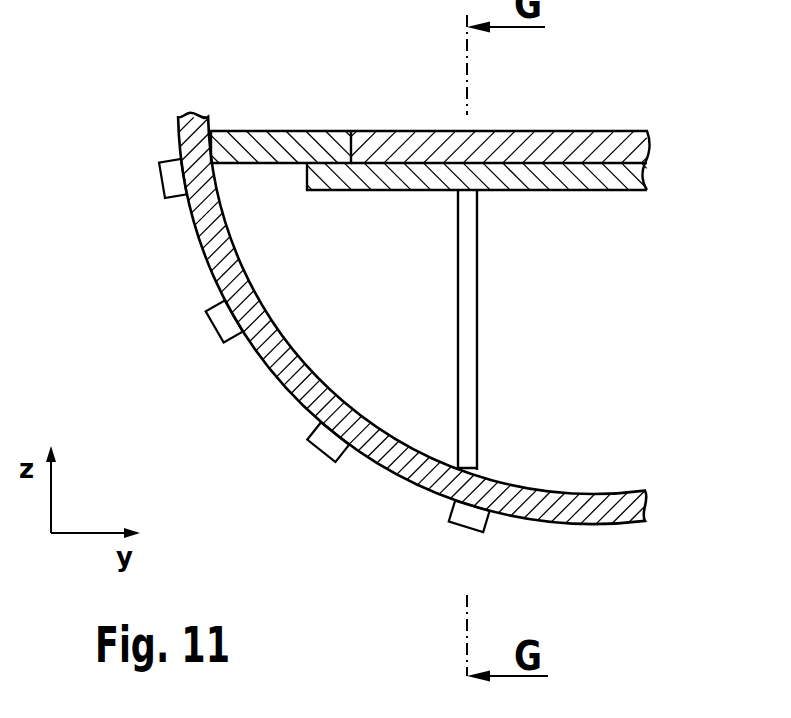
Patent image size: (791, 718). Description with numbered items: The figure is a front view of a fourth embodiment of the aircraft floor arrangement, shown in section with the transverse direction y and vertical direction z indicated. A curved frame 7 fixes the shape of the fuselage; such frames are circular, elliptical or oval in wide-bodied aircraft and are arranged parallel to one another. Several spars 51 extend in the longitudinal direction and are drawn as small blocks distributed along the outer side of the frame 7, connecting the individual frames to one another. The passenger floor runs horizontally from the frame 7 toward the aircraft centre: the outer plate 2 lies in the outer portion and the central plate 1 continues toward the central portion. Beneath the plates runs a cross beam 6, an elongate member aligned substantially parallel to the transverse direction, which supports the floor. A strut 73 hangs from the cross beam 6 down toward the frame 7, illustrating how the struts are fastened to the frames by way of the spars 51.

The central plate 1 is at (607, 127).
The outer plate 2 is at (284, 128).
The cross beam 6 is at (603, 180).
The frame 7 is at (198, 135).
The spar 51 is at (174, 182).
The strut 73 is at (468, 361).